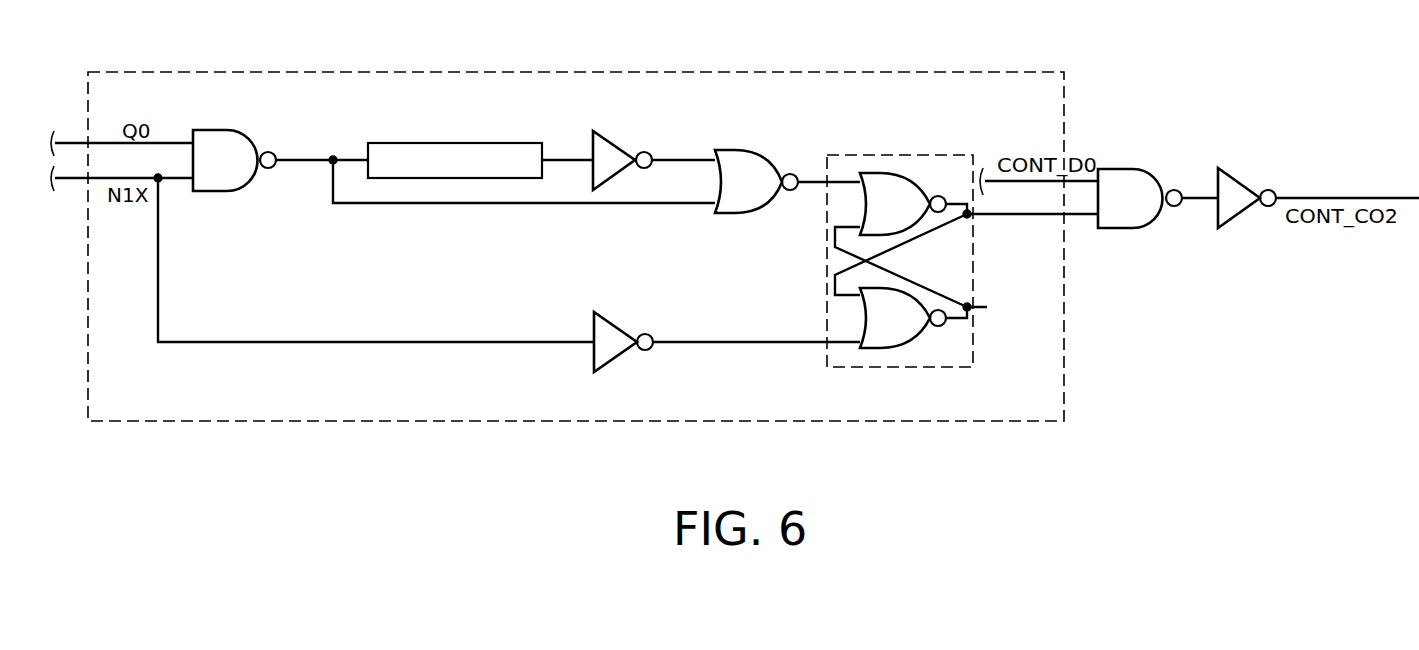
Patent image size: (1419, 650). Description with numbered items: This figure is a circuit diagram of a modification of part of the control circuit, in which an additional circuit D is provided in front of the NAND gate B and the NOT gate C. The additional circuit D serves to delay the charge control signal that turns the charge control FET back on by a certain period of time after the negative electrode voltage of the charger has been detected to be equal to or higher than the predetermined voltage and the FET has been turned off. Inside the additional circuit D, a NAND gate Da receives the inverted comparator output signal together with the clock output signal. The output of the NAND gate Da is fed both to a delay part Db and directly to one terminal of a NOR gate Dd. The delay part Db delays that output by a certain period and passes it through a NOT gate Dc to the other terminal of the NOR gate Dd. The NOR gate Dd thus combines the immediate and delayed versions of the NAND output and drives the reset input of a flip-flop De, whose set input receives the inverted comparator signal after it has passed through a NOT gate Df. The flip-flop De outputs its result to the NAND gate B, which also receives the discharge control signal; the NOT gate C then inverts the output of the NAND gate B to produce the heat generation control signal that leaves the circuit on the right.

The additional circuit D is at (1012, 73).
The NAND gate Da is at (227, 130).
The delay part Db is at (500, 142).
The NOT gate Dc is at (617, 140).
The NOR gate Dd is at (757, 152).
The flip-flop De is at (910, 153).
The NOT gate Df is at (618, 320).
The NAND gate B is at (1130, 167).
The NOT gate C is at (1235, 172).